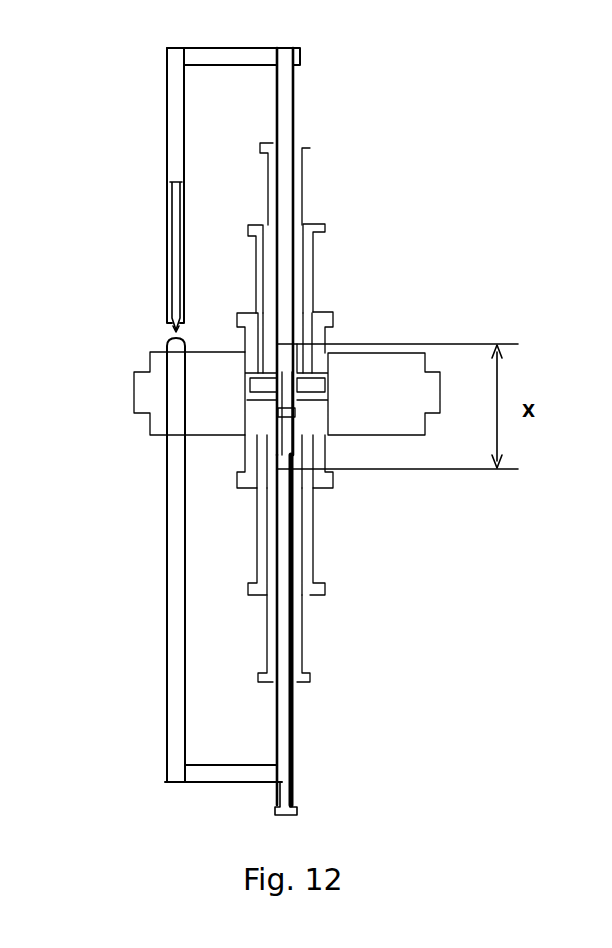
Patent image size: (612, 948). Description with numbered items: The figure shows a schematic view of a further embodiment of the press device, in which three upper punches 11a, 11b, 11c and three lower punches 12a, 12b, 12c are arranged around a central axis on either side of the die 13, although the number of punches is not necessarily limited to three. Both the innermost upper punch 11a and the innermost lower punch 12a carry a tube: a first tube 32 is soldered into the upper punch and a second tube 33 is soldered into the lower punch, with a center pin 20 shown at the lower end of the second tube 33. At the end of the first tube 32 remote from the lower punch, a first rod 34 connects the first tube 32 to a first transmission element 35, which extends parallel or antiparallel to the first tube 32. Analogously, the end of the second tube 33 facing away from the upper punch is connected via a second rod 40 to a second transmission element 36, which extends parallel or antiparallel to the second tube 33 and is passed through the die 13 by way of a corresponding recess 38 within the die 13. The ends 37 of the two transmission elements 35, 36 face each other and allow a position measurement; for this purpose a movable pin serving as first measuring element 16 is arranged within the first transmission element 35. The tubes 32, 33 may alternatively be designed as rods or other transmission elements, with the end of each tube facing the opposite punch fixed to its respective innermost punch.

The first rod 34 is at (208, 55).
The first transmission element 35 is at (177, 113).
The first measuring element 16 is at (175, 243).
The end 37 is at (174, 326).
The first tube 32 is at (288, 102).
The innermost upper punch 11a is at (303, 147).
The upper punch 11b is at (310, 248).
The upper punch 11c is at (323, 322).
The recess 38 is at (167, 420).
The die 13 is at (370, 383).
The lower punch 12c is at (327, 482).
The lower punch 12b is at (325, 583).
The innermost lower punch 12a is at (310, 673).
The second tube 33 is at (296, 724).
The second transmission element 36 is at (177, 640).
The second rod 40 is at (218, 778).
The center pin 20 is at (288, 797).